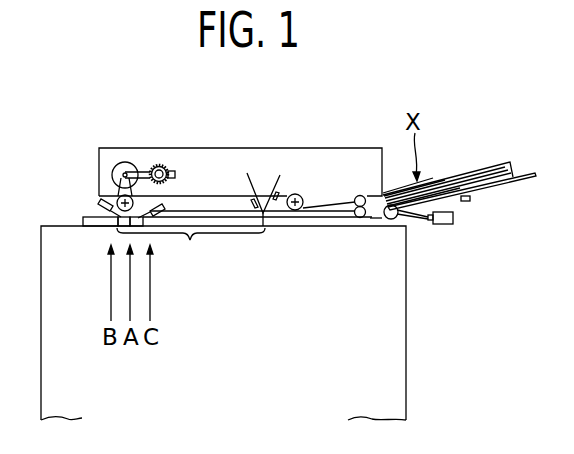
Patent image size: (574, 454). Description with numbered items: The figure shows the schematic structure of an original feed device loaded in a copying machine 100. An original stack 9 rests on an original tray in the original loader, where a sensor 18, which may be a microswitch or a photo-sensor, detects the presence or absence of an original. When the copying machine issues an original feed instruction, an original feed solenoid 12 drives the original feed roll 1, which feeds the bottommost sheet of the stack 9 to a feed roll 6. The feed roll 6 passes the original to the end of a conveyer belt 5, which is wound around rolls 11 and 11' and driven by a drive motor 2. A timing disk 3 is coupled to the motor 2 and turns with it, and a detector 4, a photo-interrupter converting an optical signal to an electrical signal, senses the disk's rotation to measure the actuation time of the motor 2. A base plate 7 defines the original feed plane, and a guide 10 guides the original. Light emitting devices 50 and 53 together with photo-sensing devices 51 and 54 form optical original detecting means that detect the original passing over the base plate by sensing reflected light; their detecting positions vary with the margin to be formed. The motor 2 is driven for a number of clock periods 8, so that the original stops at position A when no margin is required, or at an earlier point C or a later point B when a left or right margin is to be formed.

The original feed roll 1 is at (398, 217).
The drive motor 2 is at (125, 162).
The timing disk 3 is at (159, 164).
The detector 4 is at (176, 174).
The conveyer belt 5 is at (268, 195).
The feed roll 6 is at (360, 195).
The base plate 7 is at (83, 219).
The clock periods 8 is at (191, 248).
The original stack 9 is at (483, 173).
The guide 10 is at (327, 213).
The roll 11 is at (100, 186).
The roll 11' is at (327, 188).
The original feed solenoid 12 is at (453, 218).
The sensor 18 is at (470, 199).
The light emitting device 50 is at (252, 186).
The photo-sensing device 51 is at (282, 190).
The light emitting device 53 is at (97, 203).
The photo-sensing device 54 is at (167, 203).
The copying machine 100 is at (395, 336).